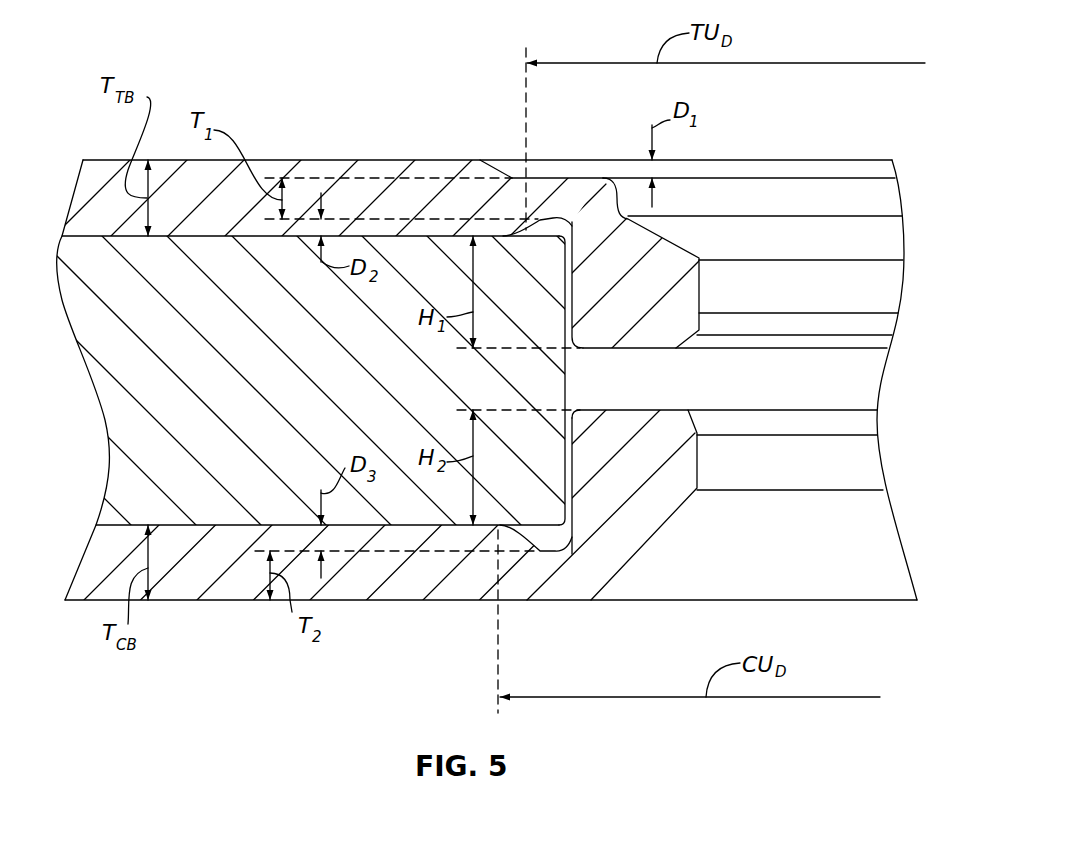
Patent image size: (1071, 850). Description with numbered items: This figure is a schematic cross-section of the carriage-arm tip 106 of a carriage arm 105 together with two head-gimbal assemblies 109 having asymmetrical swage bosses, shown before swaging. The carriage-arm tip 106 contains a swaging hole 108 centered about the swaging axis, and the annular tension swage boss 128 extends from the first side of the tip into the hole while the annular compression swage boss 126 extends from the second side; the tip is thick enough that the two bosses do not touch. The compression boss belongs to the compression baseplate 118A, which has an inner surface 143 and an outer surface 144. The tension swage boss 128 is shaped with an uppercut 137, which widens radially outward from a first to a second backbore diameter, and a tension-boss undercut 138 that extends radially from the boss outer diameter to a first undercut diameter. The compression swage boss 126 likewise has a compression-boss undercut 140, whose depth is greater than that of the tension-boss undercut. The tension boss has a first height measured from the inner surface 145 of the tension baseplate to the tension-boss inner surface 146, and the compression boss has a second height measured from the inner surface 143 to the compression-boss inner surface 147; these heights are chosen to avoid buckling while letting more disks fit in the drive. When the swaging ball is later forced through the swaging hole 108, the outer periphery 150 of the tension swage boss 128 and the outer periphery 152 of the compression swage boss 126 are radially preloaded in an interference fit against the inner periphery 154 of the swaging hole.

The carriage arm 105 is at (75, 333).
The carriage-arm tip 106 is at (150, 424).
The swaging hole 108 is at (770, 202).
The head-gimbal assembly 109 is at (235, 600).
The compression baseplate 118A is at (357, 580).
The compression swage boss 126 is at (665, 505).
The tension swage boss 128 is at (652, 328).
The uppercut 137 is at (552, 178).
The tension-boss undercut 138 is at (570, 222).
The compression-boss undercut 140 is at (553, 537).
The inner surface of the compression baseplate 143 is at (216, 522).
The outer surface of the compression baseplate 144 is at (447, 602).
The inner surface of the tension baseplate 145 is at (200, 238).
The tension-boss inner surface 146 is at (620, 348).
The compression-boss inner surface 147 is at (668, 410).
The outer periphery of the tension swage boss 150 is at (572, 296).
The outer periphery of the compression swage boss 152 is at (572, 463).
The inner periphery of the swaging hole 154 is at (563, 366).